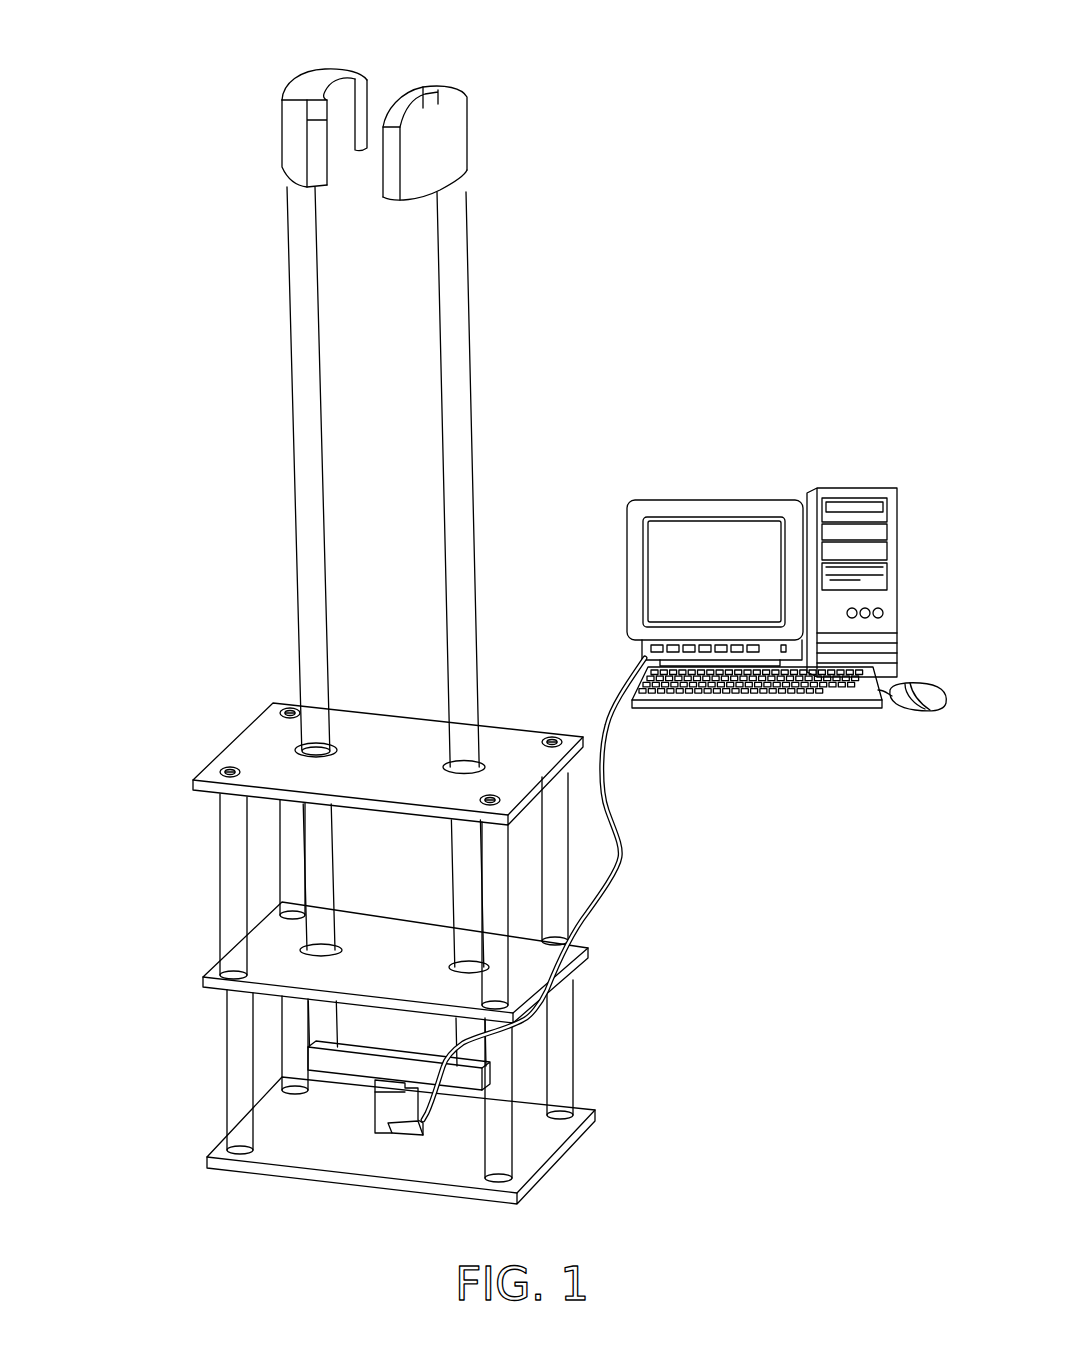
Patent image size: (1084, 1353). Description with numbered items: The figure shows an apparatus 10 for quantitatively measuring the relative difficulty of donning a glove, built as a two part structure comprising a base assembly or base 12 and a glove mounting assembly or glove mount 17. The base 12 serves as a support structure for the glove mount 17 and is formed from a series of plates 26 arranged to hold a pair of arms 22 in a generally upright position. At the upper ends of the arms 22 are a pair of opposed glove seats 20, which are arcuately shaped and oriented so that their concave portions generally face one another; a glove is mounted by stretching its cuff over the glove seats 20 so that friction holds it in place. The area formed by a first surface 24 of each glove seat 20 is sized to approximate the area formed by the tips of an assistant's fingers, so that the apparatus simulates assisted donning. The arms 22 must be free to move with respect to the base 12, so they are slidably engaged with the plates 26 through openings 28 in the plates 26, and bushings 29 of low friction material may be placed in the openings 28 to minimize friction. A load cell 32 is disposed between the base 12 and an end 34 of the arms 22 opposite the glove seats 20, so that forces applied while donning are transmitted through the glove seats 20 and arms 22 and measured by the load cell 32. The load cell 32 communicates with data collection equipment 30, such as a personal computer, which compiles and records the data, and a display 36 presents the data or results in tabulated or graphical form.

The apparatus 10 is at (513, 628).
The base assembly 12 is at (476, 615).
The glove mounting assembly 17 is at (427, 772).
The glove seats 20 is at (391, 113).
The arms 22 is at (380, 626).
The first surface 24 is at (298, 92).
The plates 26 is at (394, 953).
The openings 28 is at (320, 747).
The bushings 29 is at (295, 747).
The data collection equipment 30 is at (786, 529).
The load cell 32 is at (615, 812).
The end of the arms 34 is at (463, 1078).
The display 36 is at (730, 548).